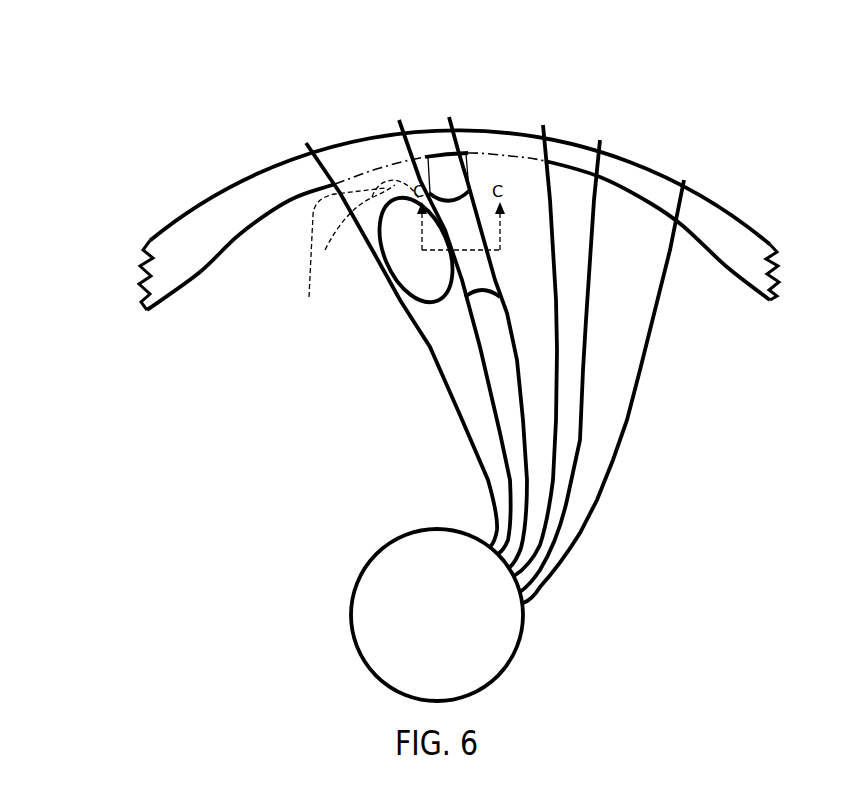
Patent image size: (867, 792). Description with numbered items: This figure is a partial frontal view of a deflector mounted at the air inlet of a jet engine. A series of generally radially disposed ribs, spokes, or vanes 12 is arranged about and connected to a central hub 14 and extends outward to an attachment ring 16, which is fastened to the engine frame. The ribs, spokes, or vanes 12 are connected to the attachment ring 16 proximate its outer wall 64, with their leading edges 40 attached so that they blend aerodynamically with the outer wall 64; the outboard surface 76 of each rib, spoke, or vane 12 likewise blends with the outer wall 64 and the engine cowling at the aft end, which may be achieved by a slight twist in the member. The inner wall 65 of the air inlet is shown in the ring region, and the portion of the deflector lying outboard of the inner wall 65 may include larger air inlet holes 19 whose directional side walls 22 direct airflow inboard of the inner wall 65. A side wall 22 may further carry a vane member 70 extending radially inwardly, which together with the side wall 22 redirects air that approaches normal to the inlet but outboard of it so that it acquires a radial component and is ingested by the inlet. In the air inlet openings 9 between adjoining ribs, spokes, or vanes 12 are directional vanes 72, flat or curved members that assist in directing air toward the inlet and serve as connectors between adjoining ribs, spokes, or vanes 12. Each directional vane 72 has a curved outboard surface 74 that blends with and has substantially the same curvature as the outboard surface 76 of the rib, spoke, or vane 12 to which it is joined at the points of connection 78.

The attachment ring 16 is at (267, 187).
The inner wall of the air inlet 65 is at (232, 235).
The directional side wall 22 is at (388, 345).
The rib, spoke, or vane 12 is at (348, 153).
The leading edge 40 is at (550, 143).
The outer wall of the attachment ring 64 is at (583, 137).
The outboard surface 76 is at (636, 157).
The air inlet hole 19 is at (427, 265).
The vane member 70 is at (359, 260).
The curved outboard surface 74 is at (430, 193).
The point of connection 78 is at (470, 190).
The directional vane 72 is at (478, 267).
The air inlet opening 9 is at (488, 323).
The central hub 14 is at (460, 644).